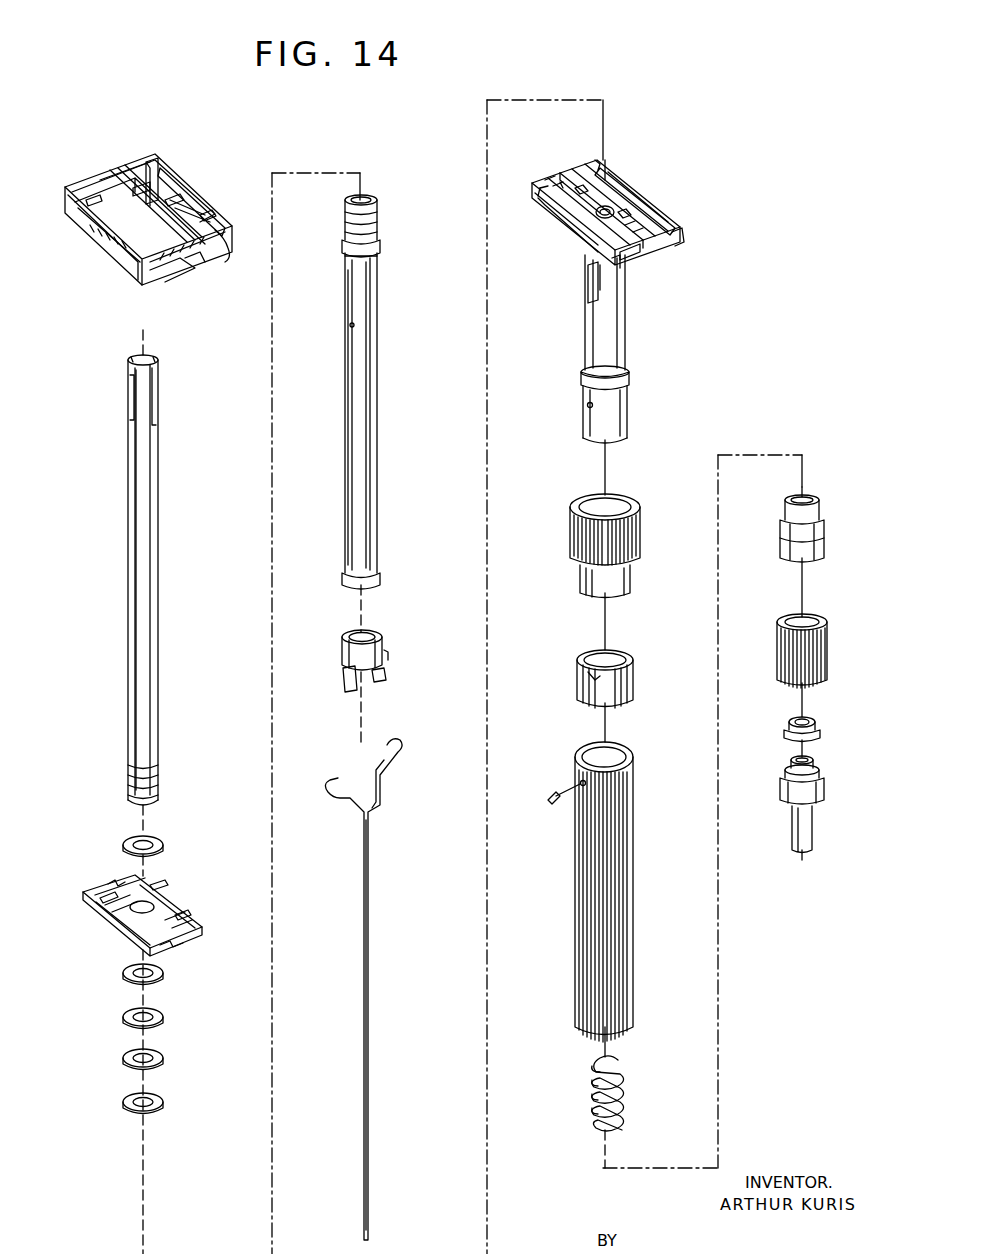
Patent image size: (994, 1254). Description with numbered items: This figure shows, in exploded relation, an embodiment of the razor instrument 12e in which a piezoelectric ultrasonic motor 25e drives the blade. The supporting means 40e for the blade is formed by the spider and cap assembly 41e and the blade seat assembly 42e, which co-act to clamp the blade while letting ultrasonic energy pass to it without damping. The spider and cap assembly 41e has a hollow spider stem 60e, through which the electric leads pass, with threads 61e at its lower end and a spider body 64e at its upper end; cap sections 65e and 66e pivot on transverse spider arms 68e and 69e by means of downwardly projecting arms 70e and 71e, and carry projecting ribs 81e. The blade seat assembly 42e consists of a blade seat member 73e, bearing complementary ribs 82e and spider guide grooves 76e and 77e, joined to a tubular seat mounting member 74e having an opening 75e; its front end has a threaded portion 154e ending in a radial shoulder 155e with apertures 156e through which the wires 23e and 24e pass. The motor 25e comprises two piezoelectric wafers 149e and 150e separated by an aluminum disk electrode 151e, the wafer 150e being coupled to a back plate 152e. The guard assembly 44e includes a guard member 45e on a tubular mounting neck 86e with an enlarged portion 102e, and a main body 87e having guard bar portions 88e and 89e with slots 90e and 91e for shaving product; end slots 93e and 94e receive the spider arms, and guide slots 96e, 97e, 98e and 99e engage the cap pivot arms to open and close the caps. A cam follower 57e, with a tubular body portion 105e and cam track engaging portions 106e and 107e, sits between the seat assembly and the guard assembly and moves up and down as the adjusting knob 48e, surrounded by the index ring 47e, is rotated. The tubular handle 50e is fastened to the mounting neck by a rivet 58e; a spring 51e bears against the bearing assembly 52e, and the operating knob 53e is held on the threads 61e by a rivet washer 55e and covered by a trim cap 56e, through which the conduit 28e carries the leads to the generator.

The instrument 12e is at (232, 186).
The spider body 64e is at (138, 186).
The downwardly projecting arm 70e is at (153, 160).
The cap section 65e is at (205, 205).
The transverse spider arm 68e is at (92, 200).
The ribs 81e is at (175, 200).
The cap section 66e is at (100, 240).
The supporting means 40e is at (222, 242).
The transverse spider arm 69e is at (185, 280).
The downwardly projecting arm 71e is at (205, 262).
The spider and cap assembly 41e is at (158, 692).
The hollow spider stem 60e is at (150, 587).
The threads 61e is at (158, 796).
The blade seat member 73e is at (170, 905).
The spider guide groove 77e is at (108, 884).
The complementary ribs 82e is at (160, 885).
The spider guide groove 76e is at (180, 945).
The piezoelectric wafer 149e is at (125, 980).
The piezoelectric ultrasonic motor 25e is at (165, 984).
The aluminum disk electrode 151e is at (165, 1022).
The piezoelectric wafer 150e is at (125, 1066).
The back plate 152e is at (163, 1108).
The blade seat assembly 42e is at (378, 422).
The threaded portion 154e is at (380, 210).
The radial shoulder 155e is at (382, 250).
The apertures 156e is at (345, 256).
The opening 75e is at (350, 326).
The tubular seat mounting member 74e is at (377, 512).
The cam follower 57e is at (388, 649).
The tubular body portion 105e is at (388, 645).
The cam track engaging portion 106e is at (386, 678).
The cam track engaging portion 107e is at (345, 690).
The lead wire 23e is at (372, 850).
The lead wire 24e is at (363, 898).
The guard assembly 44e is at (680, 186).
The elongated slot 94e is at (605, 205).
The guard member 45e is at (560, 180).
The guide slot 98e is at (598, 162).
The guide slot 99e is at (542, 186).
The guard bar portion 88e is at (645, 190).
The elongated slots 90e is at (665, 205).
The slots 91e is at (545, 200).
The guide slot 96e is at (680, 240).
The guard bar portion 89e is at (560, 225).
The main body 87e is at (640, 250).
The enlarged portion 102e is at (586, 280).
The elongated slot 93e is at (625, 262).
The guide slot 97e is at (598, 280).
The tubular mounting neck 86e is at (627, 348).
The adjusting knob 48e is at (642, 533).
The index ring 47e is at (637, 688).
The tubular handle 50e is at (640, 918).
The rivet 58e is at (552, 806).
The spring 51e is at (640, 1100).
The bearing assembly 52e is at (826, 537).
The operating knob 53e is at (830, 655).
The rivet washer 55e is at (828, 730).
The trim cap 56e is at (830, 802).
The conduit 28e is at (814, 824).